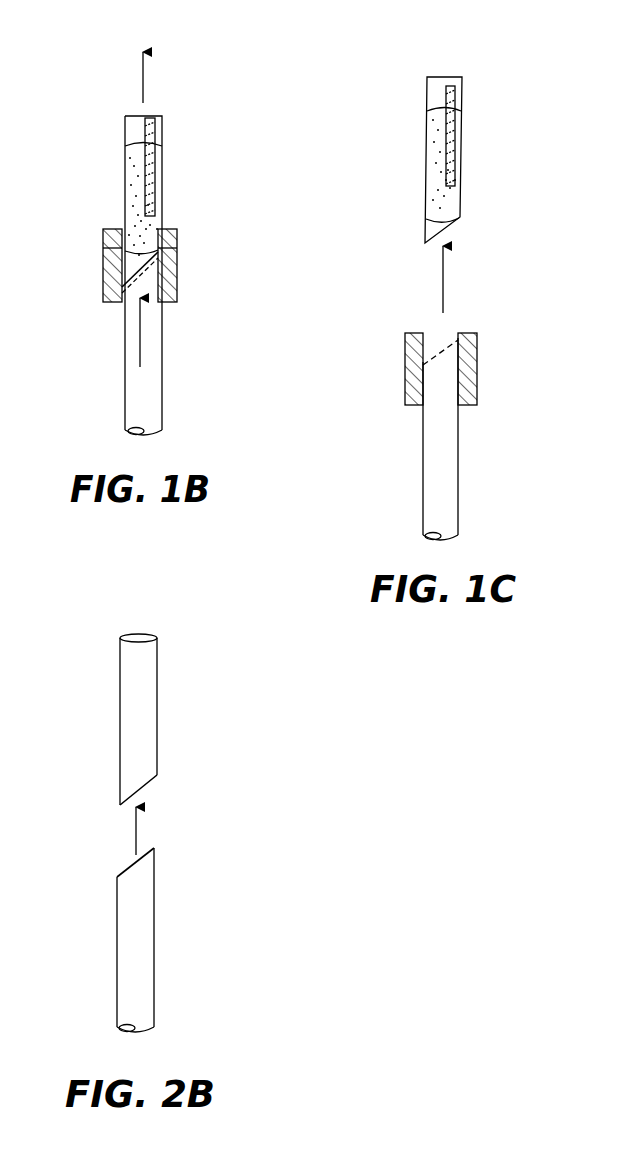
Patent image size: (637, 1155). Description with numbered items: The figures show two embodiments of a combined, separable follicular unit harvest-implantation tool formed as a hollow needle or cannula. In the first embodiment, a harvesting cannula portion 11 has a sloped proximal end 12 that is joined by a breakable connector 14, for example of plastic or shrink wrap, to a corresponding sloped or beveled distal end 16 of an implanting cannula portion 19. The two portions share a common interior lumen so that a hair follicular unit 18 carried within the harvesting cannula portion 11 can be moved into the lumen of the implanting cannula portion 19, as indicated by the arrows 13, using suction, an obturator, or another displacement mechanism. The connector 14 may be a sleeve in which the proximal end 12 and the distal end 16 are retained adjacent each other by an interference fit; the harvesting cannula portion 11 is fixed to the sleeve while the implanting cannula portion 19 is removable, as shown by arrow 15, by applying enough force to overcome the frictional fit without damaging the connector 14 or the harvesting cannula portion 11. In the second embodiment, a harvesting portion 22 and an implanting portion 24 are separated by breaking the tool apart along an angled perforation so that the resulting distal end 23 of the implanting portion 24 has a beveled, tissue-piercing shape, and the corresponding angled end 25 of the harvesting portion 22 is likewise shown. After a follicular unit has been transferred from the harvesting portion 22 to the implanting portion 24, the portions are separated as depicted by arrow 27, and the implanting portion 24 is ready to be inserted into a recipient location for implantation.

In FIG. 1B, the harvesting cannula portion 11 is at (125, 362).
In FIG. 1C, the harvesting cannula portion 11 is at (458, 437).
In FIG. 1C, the sloped proximal end 12 is at (437, 355).
In FIG. 1B, the arrows 13 is at (143, 88).
In FIG. 1B, the breakable connector 14 is at (177, 262).
In FIG. 1C, the breakable connector 14 is at (477, 355).
In FIG. 1C, the arrow 15 is at (443, 278).
In FIG. 1C, the sloped distal end 16 is at (450, 227).
In FIG. 1B, the hair follicular unit 18 is at (152, 173).
In FIG. 1C, the hair follicular unit 18 is at (427, 140).
In FIG. 1B, the implanting cannula portion 19 is at (125, 174).
In FIG. 1C, the implanting cannula portion 19 is at (460, 155).
In FIG. 2B, the harvesting portion 22 is at (154, 912).
In FIG. 2B, the distal end 23 is at (148, 788).
In FIG. 2B, the implanting portion 24 is at (157, 703).
In FIG. 2B, the angled end face of lower tube 25 is at (150, 852).
In FIG. 2B, the arrow 27 is at (136, 835).